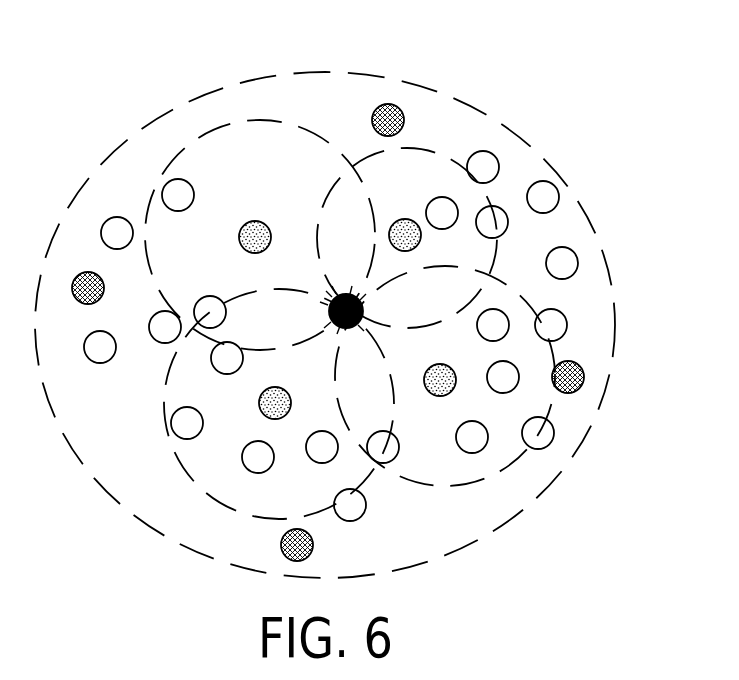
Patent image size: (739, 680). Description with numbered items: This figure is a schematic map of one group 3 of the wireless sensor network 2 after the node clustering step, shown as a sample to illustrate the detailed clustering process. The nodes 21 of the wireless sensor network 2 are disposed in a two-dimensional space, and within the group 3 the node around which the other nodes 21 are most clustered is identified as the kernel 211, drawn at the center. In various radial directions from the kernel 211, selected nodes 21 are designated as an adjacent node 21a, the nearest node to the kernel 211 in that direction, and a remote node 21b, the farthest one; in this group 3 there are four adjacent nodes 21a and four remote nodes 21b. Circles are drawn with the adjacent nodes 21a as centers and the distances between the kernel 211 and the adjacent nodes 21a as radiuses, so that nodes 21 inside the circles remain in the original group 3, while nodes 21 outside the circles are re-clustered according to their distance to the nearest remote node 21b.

The wireless sensor network 2 is at (513, 168).
The group 3 is at (588, 207).
The node 21 is at (178, 190).
The adjacent node 21a is at (408, 222).
The remote node 21b is at (375, 108).
The kernel 211 is at (346, 300).